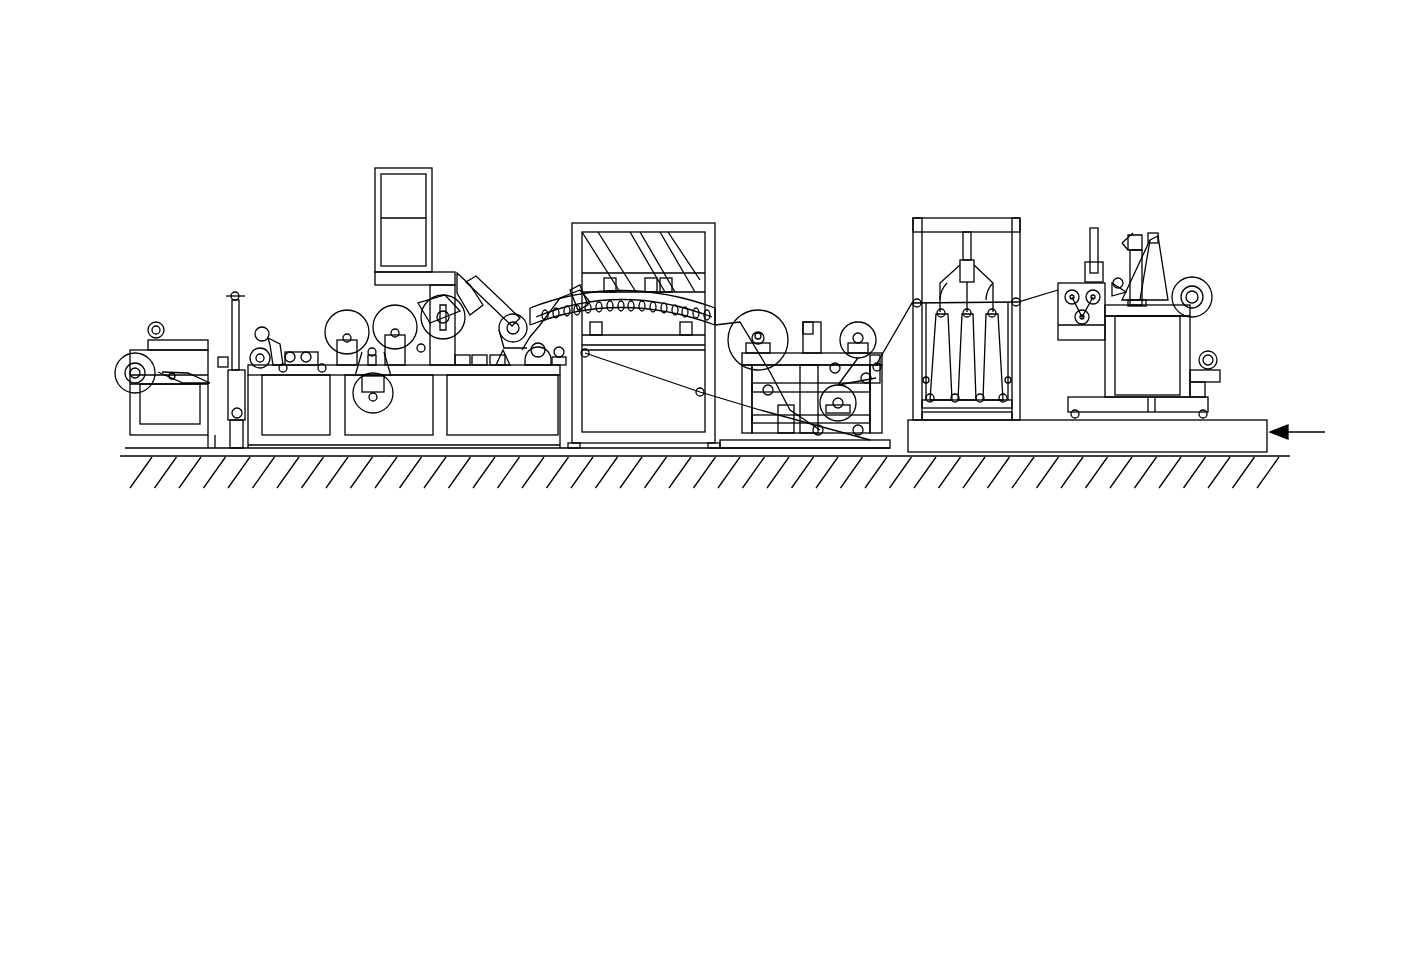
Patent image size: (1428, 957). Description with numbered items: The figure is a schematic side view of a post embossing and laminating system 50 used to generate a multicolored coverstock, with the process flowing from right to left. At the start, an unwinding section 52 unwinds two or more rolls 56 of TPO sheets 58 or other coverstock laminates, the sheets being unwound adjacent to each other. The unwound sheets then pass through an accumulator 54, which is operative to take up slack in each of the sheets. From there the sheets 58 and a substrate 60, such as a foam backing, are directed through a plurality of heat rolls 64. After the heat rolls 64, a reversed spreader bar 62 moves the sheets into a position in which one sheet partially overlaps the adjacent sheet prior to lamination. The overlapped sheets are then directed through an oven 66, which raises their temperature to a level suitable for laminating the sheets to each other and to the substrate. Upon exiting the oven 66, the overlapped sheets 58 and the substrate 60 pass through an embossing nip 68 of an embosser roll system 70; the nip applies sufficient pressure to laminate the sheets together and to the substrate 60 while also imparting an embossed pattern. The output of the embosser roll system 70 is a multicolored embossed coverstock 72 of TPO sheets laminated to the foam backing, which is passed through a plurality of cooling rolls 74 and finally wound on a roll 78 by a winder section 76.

The post embossing and laminating system 50 is at (1008, 134).
The unwinding section 52 is at (1145, 515).
The accumulator 54 is at (978, 515).
The rolls 56 is at (1208, 300).
The TPO sheets 58 is at (740, 322).
The substrate 60 is at (662, 383).
The reversed spreader bar 62 is at (716, 322).
The heat rolls 64 is at (817, 515).
The oven 66 is at (640, 515).
The embossing nip 68 is at (527, 312).
The embosser roll system 70 is at (508, 515).
The multicolored embossed coverstock 72 is at (456, 300).
The cooling rolls 74 is at (378, 515).
The winder section 76 is at (172, 515).
The roll 78 is at (135, 352).